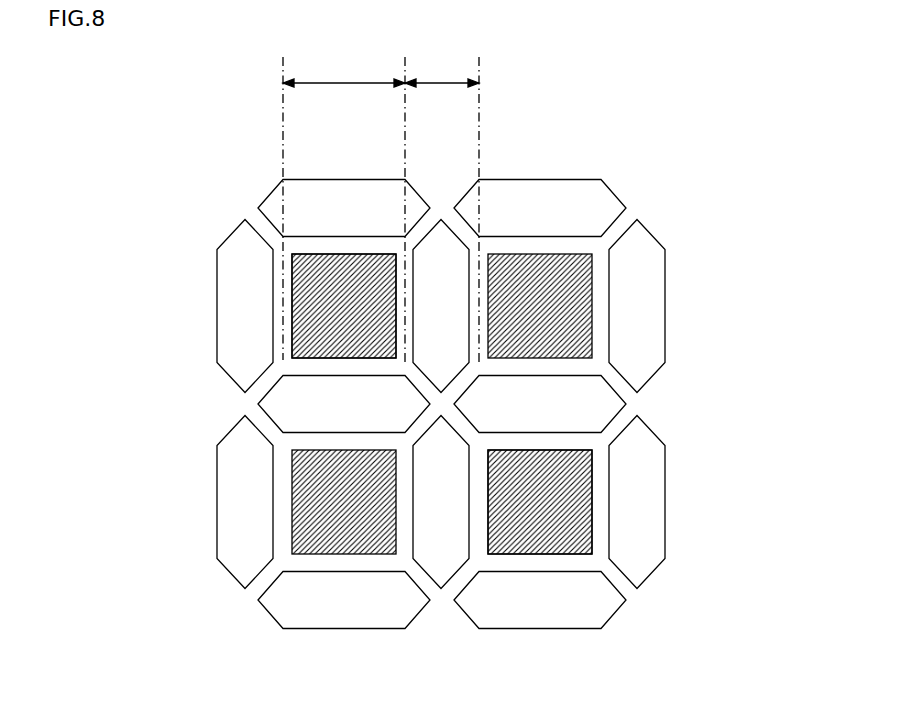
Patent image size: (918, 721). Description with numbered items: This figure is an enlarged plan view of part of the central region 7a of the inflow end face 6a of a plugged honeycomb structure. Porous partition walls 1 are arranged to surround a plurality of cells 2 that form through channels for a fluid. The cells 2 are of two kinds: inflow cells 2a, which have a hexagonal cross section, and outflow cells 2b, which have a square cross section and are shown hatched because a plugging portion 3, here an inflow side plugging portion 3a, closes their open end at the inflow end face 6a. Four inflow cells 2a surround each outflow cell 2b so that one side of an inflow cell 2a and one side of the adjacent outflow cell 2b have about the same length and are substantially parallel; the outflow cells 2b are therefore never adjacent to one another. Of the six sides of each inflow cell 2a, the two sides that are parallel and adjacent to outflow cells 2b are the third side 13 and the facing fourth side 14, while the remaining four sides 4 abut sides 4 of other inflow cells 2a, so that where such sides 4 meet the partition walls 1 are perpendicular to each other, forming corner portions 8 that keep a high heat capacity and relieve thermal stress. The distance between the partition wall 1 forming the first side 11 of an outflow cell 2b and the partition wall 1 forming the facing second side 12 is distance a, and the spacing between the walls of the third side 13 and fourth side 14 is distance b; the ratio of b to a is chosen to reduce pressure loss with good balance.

The partition wall 1 is at (277, 235).
The cell 2 is at (246, 306).
The inflow cell 2a is at (240, 298).
The outflow cell 2b is at (330, 290).
The plugging portion 3 is at (246, 338).
The inflow side plugging portion 3a is at (330, 333).
The side 4 is at (453, 577).
The inflow end face 6a is at (237, 138).
The central region 7a is at (787, 77).
The corner portion 8 is at (602, 180).
The first side 11 is at (291, 500).
The second side 12 is at (397, 535).
The third side 13 is at (413, 530).
The fourth side 14 is at (470, 497).